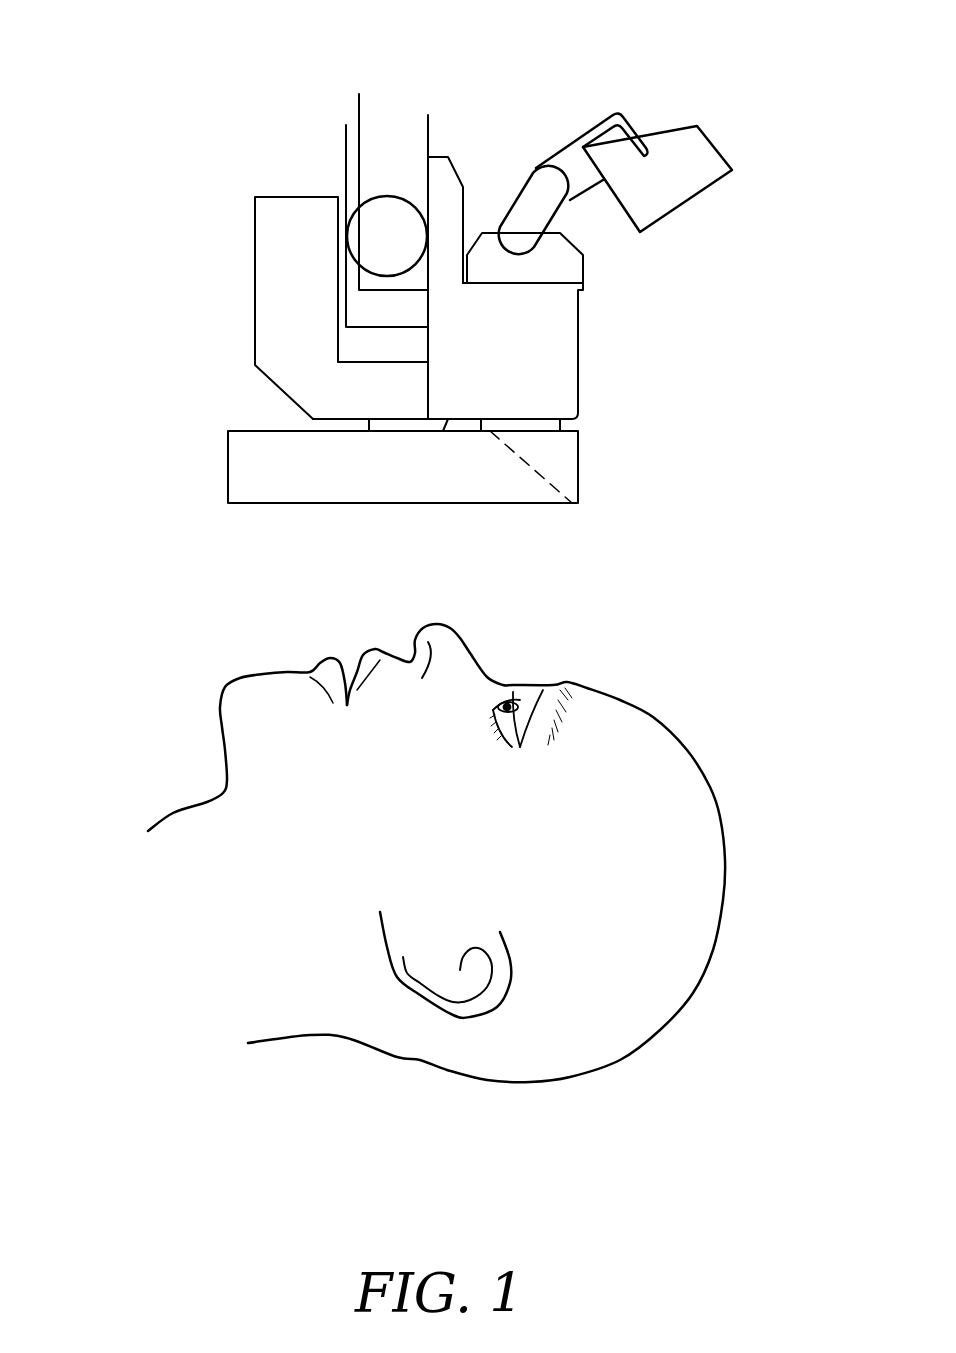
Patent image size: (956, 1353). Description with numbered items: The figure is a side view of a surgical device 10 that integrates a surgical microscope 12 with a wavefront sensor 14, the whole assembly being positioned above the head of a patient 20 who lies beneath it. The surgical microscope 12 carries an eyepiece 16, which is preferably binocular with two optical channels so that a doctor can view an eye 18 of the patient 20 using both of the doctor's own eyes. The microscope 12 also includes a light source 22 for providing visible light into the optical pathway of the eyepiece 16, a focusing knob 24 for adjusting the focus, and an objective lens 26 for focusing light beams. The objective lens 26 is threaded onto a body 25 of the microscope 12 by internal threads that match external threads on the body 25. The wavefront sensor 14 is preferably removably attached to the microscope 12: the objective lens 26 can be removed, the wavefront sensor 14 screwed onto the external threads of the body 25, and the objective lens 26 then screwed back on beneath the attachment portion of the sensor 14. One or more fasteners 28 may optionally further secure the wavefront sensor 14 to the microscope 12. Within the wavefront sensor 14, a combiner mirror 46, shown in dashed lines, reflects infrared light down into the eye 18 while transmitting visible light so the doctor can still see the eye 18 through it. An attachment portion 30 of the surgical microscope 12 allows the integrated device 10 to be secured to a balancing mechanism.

The surgical device 10 is at (198, 60).
The surgical microscope 12 is at (233, 160).
The wavefront sensor 14 is at (226, 469).
The eyepiece 16 is at (695, 210).
The eye 18 is at (513, 681).
The patient 20 is at (678, 689).
The light source 22 is at (289, 192).
The focusing knob 24 is at (388, 193).
The body 25 is at (586, 322).
The objective lens 26 is at (564, 426).
The fasteners 28 is at (403, 426).
The attachment portion 30 is at (366, 112).
The combiner mirror 46 is at (544, 474).